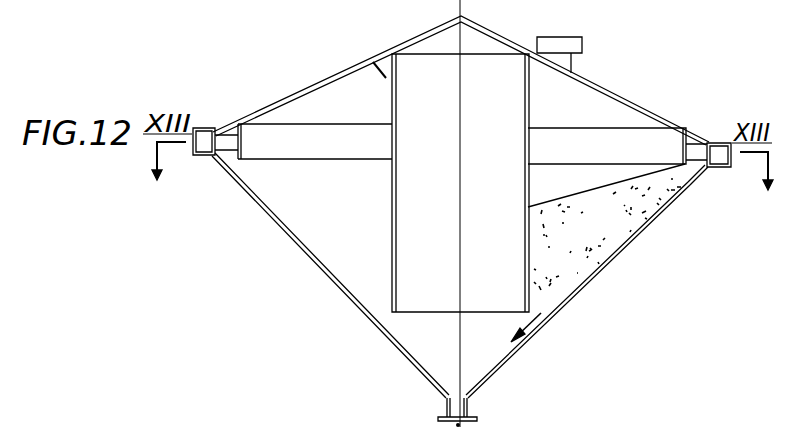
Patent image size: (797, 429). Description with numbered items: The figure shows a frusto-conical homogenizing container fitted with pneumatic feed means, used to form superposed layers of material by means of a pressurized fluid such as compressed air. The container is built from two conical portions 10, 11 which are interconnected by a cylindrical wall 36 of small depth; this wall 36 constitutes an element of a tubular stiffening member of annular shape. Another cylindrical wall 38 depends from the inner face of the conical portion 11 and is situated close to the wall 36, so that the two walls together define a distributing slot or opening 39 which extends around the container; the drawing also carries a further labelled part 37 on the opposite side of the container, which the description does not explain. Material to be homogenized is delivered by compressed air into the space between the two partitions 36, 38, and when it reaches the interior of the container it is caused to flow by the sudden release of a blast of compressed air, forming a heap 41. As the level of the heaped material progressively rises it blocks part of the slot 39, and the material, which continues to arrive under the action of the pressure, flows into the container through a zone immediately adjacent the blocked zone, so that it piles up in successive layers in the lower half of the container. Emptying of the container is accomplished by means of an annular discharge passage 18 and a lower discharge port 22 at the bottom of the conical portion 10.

The conical portion 10 is at (655, 219).
The conical portion 11 is at (636, 104).
The annular discharge passage 18 is at (545, 318).
The lower discharge port 22 is at (470, 406).
The cylindrical wall 36 is at (711, 142).
The left bearing 37 is at (207, 126).
The cylindrical wall 38 is at (682, 148).
The distributing slot 39 is at (696, 172).
The heap 41 is at (600, 239).